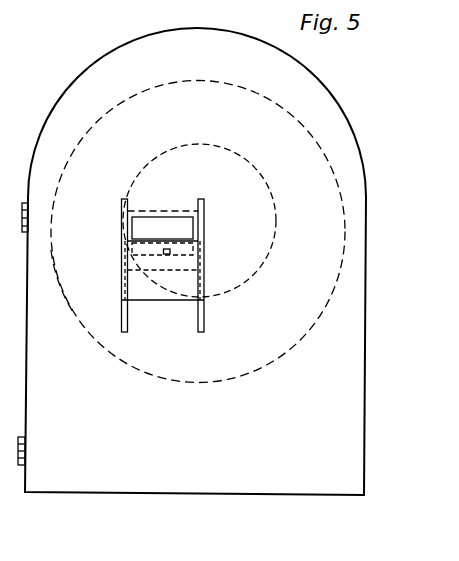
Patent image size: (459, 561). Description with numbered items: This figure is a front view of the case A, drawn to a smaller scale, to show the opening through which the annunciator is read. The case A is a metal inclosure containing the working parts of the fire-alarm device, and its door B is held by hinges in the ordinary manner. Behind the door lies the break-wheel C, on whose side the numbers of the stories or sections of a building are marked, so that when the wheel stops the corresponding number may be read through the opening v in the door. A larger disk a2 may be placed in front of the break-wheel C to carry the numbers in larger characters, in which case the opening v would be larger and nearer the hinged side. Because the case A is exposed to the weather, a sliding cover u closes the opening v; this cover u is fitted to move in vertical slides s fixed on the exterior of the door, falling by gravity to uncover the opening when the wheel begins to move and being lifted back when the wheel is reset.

The case A is at (204, 261).
The door B is at (198, 232).
The break-wheel C is at (204, 220).
The disk a2 is at (66, 281).
The vertical slides s is at (168, 265).
The sliding cover u is at (163, 270).
The opening v is at (180, 220).